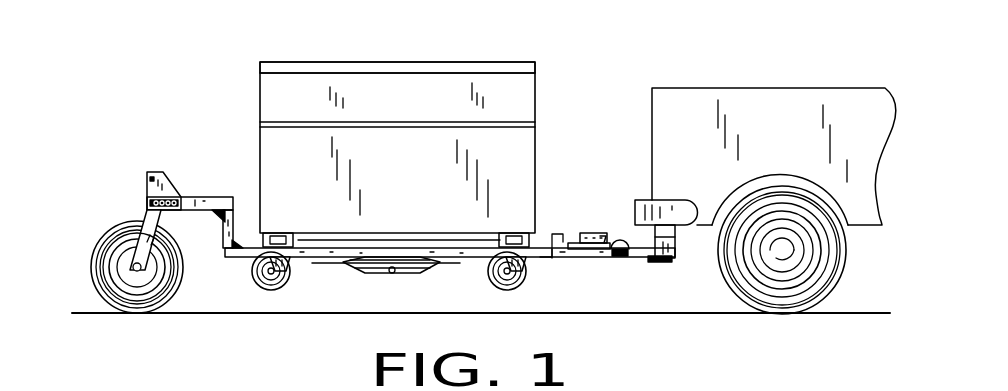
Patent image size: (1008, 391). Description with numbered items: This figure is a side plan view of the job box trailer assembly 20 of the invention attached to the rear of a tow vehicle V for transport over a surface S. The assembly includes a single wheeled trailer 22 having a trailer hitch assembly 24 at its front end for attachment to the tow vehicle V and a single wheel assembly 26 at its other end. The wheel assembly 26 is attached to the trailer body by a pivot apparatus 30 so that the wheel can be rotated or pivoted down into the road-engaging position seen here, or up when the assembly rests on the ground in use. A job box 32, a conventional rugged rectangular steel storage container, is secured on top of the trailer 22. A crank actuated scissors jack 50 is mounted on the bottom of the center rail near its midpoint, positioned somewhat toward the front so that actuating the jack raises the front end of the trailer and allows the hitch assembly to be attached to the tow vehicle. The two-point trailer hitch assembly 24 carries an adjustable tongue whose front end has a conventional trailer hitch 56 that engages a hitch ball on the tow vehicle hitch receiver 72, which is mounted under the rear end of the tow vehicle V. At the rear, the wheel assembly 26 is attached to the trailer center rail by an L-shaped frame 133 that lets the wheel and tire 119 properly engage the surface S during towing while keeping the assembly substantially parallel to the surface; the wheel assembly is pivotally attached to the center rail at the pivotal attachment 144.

The job box trailer assembly 20 is at (359, 183).
The single wheeled trailer 22 is at (371, 147).
The trailer hitch assembly 24 is at (573, 240).
The single wheel assembly 26 is at (110, 225).
The pivot apparatus 30 is at (150, 180).
The job box 32 is at (515, 99).
The scissors jack 50 is at (375, 271).
The trailer hitch 56 is at (606, 243).
The tow vehicle hitch receiver 72 is at (677, 237).
The wheel and tire 119 is at (102, 268).
The L-shaped frame 133 is at (203, 212).
The pivotal attachment 144 is at (227, 257).
The tow vehicle V is at (770, 62).
The surface S is at (845, 313).